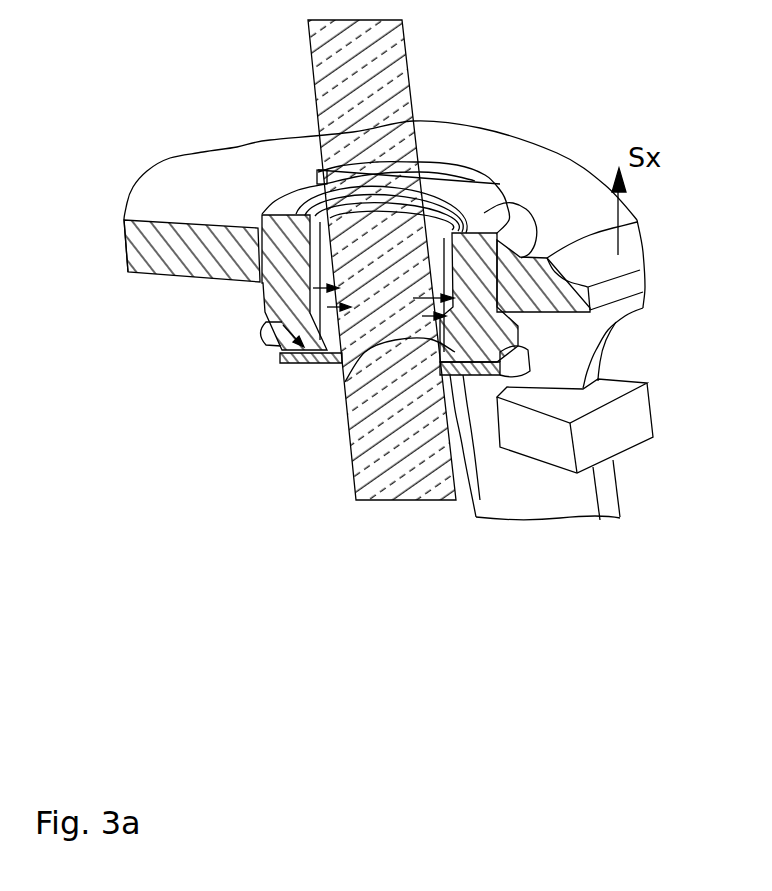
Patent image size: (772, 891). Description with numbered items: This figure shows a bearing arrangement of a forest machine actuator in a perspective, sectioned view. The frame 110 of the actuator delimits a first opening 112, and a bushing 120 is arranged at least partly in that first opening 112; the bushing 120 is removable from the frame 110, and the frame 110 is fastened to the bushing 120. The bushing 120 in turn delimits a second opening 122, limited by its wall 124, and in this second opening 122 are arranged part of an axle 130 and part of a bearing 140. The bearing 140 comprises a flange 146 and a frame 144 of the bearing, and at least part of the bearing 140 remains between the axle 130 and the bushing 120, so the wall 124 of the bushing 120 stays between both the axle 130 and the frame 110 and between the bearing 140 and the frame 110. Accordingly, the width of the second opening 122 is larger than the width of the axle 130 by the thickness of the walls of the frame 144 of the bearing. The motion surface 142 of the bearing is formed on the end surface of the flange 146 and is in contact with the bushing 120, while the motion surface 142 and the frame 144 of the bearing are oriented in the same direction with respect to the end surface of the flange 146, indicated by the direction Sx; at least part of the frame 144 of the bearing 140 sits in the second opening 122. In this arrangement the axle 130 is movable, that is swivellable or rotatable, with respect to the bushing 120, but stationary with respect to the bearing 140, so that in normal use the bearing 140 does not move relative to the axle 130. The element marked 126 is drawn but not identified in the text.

The frame 110 is at (486, 213).
The first opening 112 is at (426, 204).
The bushing 120 is at (507, 360).
The second opening 122 is at (402, 292).
The wall 124 is at (263, 219).
The locking tab 126 is at (277, 330).
The axle 130 is at (353, 455).
The bearing 140 is at (497, 398).
The motion surface 142 is at (262, 309).
The frame of the bearing 144 is at (400, 297).
The flange 146 is at (306, 360).